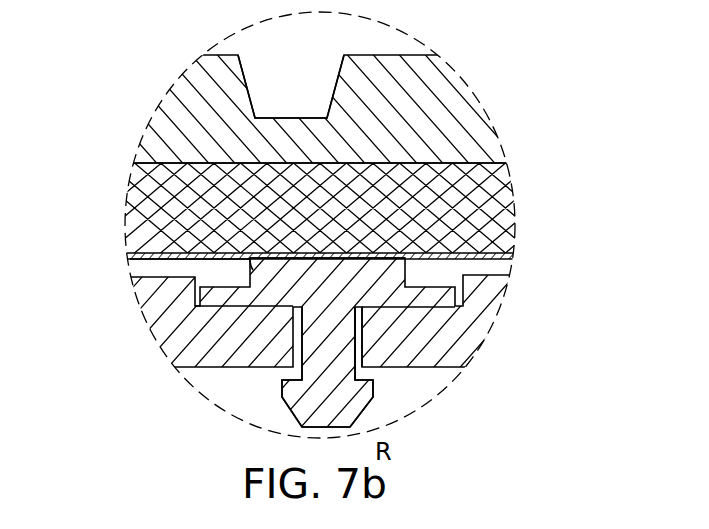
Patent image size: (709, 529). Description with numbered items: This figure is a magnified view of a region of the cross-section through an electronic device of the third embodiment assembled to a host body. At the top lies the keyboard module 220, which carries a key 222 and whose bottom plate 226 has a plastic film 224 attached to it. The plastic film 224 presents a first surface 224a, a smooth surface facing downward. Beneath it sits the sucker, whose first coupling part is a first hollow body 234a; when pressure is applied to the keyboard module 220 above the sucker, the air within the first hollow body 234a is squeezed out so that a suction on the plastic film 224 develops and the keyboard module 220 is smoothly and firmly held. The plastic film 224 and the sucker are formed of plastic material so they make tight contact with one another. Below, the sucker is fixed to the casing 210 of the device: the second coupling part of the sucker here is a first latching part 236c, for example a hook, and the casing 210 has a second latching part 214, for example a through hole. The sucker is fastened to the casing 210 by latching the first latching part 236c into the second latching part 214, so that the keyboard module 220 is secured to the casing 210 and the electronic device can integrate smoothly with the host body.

The casing 210 is at (267, 347).
The second latching part 214 is at (358, 338).
The keyboard module 220 is at (450, 118).
The key 222 is at (392, 55).
The plastic film 224 is at (128, 257).
The first surface 224a is at (170, 261).
The bottom plate 226 is at (472, 212).
The first hollow body 234a is at (328, 260).
The first latching part 236c is at (363, 417).